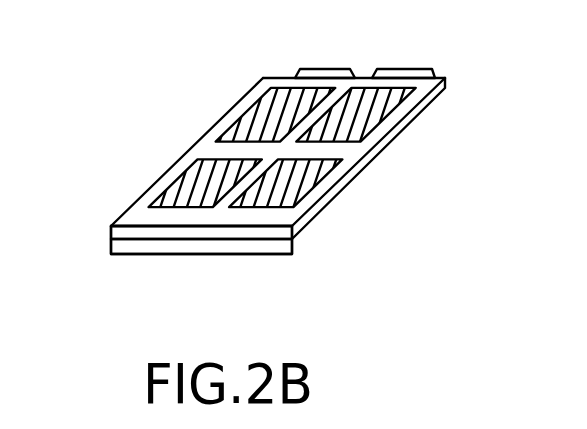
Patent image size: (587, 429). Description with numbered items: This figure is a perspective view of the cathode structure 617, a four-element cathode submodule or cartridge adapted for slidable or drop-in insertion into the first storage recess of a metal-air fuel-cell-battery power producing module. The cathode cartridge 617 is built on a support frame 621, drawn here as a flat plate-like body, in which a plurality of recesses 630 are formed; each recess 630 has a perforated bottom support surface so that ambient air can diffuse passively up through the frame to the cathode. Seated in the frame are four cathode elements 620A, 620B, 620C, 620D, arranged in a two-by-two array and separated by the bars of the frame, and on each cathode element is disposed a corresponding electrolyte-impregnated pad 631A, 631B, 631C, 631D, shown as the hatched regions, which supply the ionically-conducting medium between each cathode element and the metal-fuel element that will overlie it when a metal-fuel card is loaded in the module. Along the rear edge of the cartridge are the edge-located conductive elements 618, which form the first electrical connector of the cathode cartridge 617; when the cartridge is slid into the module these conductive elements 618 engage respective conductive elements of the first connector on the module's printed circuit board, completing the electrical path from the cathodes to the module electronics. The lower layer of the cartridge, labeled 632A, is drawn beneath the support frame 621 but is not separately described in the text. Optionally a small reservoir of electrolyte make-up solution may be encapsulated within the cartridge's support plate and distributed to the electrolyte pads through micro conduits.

The cathode structure 617 is at (191, 258).
The first electrical connector 618 is at (343, 67).
The cathode element 620A is at (330, 191).
The cathode element 620B is at (176, 178).
The cathode element 620C is at (258, 97).
The cathode element 620D is at (411, 117).
The support frame 621 is at (323, 215).
The recess 630 is at (160, 217).
The electrolyte-impregnated pad 631A is at (320, 194).
The electrolyte-impregnated pad 631B is at (188, 157).
The electrolyte-impregnated pad 631C is at (263, 97).
The electrolyte-impregnated pad 631D is at (390, 136).
The lower base layer 632A is at (267, 256).